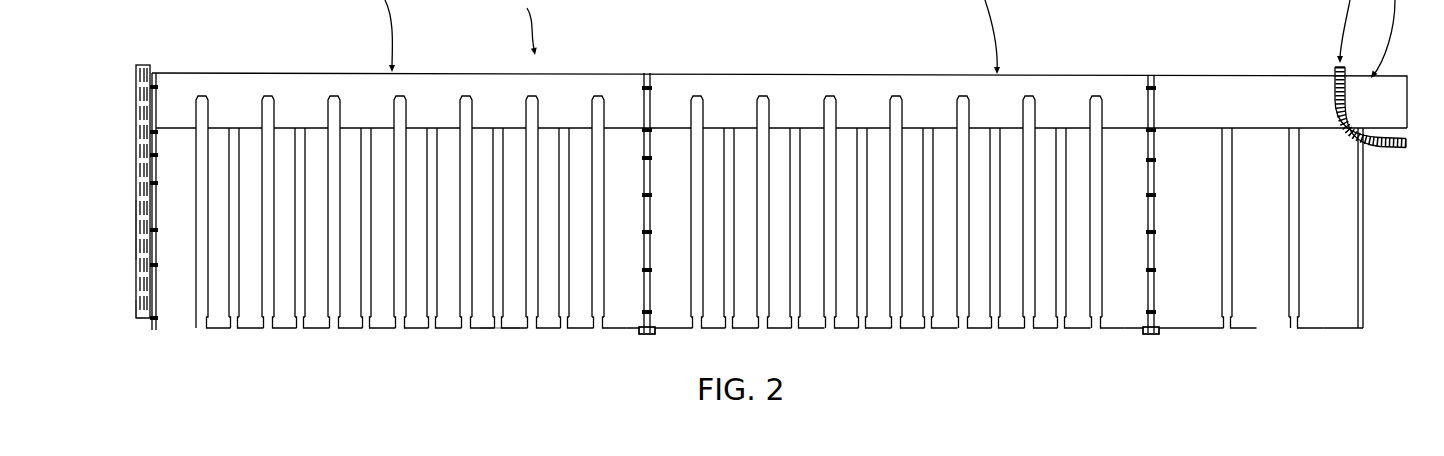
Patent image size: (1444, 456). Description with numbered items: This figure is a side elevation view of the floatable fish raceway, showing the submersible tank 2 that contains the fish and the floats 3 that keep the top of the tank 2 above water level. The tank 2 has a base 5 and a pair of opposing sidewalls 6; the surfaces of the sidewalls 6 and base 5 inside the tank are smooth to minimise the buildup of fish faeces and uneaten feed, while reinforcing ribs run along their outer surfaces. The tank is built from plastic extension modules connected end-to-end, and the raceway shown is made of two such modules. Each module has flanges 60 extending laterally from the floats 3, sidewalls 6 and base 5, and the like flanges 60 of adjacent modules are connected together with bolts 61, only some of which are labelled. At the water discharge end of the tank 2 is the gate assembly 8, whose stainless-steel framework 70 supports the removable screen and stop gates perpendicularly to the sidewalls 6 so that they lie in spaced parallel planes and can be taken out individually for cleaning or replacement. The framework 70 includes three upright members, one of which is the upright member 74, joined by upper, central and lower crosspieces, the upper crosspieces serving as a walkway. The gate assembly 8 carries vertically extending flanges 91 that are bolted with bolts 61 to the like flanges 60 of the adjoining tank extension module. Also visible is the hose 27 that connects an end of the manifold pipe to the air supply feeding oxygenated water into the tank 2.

The submersible tank 2 is at (888, 72).
The floats 3 is at (376, 116).
The base 5 is at (500, 330).
The sidewalls 6 is at (632, 177).
The gate assembly 8 is at (137, 58).
The hose 27 is at (1380, 148).
The flanges 60 is at (152, 320).
The bolts 61 is at (148, 187).
The framework 70 is at (138, 320).
The upright member 74 is at (137, 220).
The vertically extending flanges 91 is at (154, 72).